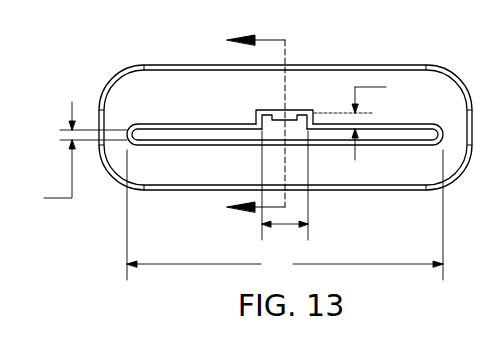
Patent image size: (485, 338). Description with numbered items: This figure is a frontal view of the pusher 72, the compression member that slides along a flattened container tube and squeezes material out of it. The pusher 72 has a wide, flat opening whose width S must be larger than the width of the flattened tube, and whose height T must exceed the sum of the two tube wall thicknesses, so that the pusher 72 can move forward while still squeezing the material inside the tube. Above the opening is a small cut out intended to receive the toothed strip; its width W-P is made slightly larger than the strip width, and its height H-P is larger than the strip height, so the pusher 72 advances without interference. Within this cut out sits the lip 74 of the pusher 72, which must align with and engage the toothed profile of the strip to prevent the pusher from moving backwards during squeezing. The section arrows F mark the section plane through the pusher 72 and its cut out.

The pusher 72 is at (125, 98).
The lip 74 is at (292, 114).
The section line F- F is at (246, 124).
The height of pusher cut out T is at (71, 154).
The height of pusher cut out to receive strip H-P is at (374, 120).
The width of pusher cut out W-P is at (314, 185).
The width of pusher opening S is at (285, 215).